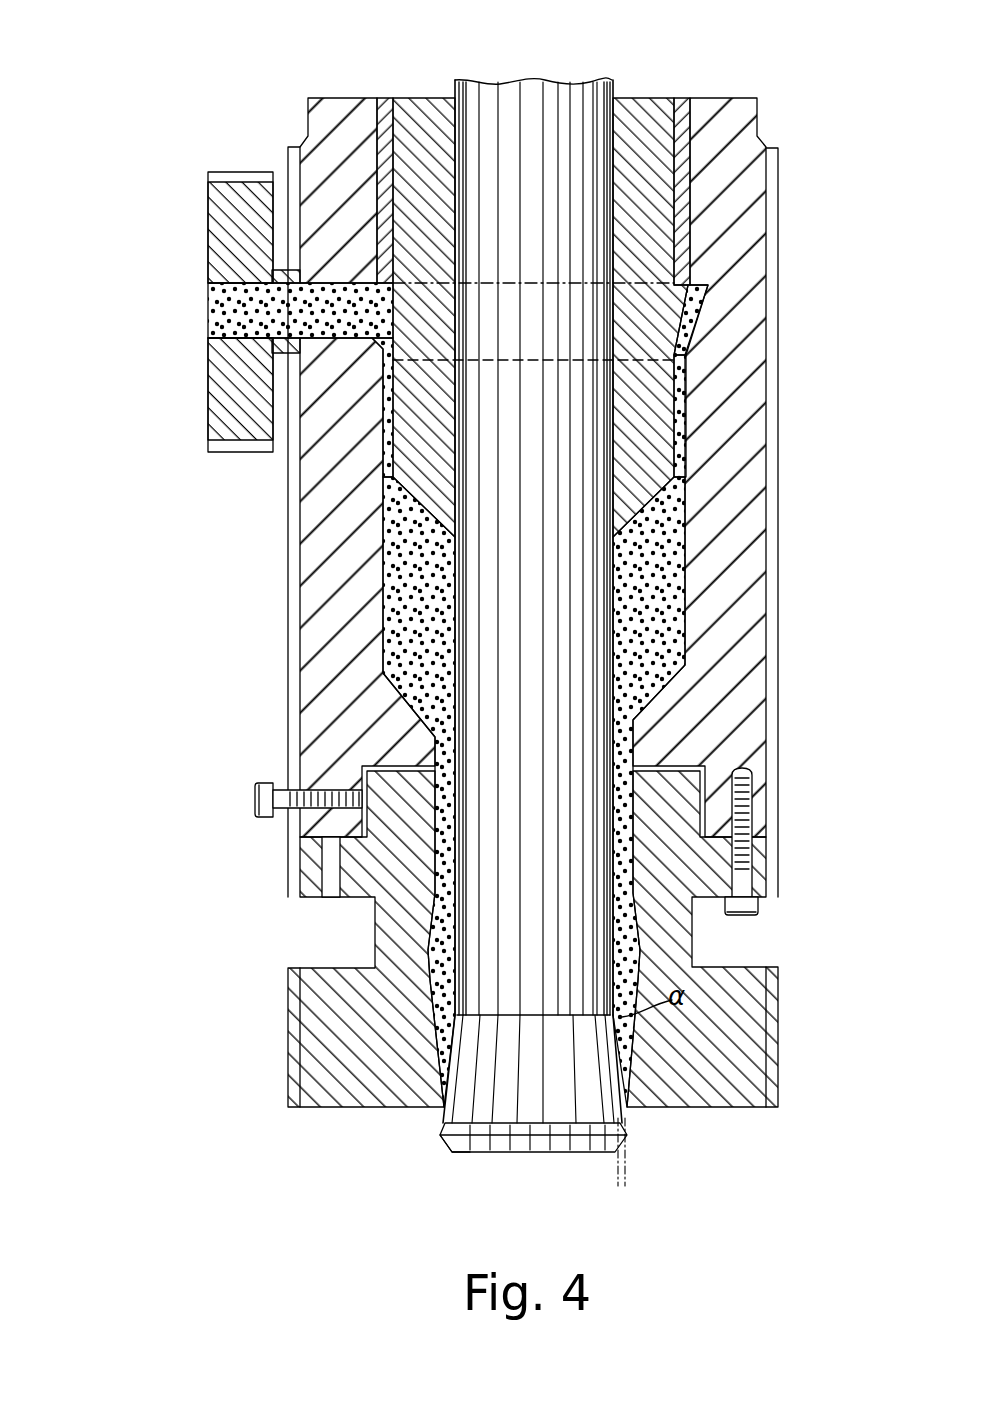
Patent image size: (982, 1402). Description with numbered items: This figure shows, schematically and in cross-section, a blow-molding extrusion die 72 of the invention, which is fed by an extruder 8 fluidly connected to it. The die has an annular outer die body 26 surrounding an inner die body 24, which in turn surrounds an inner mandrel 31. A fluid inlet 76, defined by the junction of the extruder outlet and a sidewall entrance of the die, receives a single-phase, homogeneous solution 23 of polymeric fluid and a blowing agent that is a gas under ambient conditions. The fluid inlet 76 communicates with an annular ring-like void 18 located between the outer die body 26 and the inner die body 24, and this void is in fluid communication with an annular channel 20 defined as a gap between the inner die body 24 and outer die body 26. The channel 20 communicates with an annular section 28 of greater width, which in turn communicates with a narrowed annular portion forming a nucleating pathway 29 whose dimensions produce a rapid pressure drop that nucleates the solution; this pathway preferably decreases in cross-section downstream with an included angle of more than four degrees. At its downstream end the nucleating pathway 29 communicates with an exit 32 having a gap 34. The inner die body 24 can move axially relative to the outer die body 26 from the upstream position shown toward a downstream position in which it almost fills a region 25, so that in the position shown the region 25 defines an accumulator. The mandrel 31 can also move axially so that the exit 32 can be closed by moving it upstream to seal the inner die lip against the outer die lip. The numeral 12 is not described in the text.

The blow-molding extrusion die 72 is at (172, 96).
The interface joint 12 is at (361, 258).
The extruder 8 is at (207, 226).
The single-phase, homogeneous solution 23 is at (208, 298).
The fluid inlet 76 is at (192, 335).
The annular ring-like void 18 is at (705, 296).
The outer die body 26 is at (738, 323).
The annular channel 20 is at (687, 413).
The inner die body 24 is at (673, 477).
The region 25 is at (663, 585).
The annular section 28 is at (433, 780).
The inner mandrel 31 is at (548, 495).
The nucleating pathway 29 is at (457, 1105).
The exit 32 is at (420, 1134).
The gap 34 is at (573, 1172).